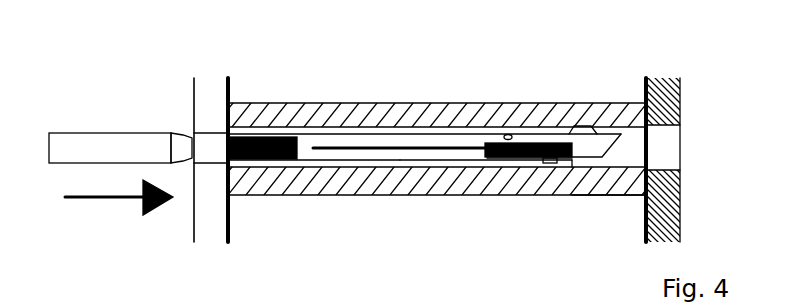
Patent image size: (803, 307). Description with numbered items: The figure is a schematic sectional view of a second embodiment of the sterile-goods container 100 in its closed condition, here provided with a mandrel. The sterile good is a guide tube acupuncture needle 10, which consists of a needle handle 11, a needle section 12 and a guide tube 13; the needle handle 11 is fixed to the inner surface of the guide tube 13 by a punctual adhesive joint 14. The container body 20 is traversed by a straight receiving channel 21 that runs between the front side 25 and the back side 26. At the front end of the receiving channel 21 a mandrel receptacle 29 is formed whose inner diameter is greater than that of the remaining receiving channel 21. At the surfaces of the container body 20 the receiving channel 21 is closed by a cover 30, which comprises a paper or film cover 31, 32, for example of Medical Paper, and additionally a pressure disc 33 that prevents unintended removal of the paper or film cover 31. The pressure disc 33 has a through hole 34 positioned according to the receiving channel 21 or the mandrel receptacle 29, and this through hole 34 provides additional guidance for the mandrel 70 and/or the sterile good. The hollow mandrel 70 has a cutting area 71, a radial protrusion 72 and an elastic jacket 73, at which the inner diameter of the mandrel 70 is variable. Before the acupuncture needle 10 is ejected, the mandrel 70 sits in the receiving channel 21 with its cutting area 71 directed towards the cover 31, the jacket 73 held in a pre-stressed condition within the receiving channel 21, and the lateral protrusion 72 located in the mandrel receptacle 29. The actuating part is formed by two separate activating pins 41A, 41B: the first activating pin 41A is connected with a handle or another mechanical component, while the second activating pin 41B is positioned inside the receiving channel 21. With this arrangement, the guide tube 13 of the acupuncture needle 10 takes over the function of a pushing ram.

The container 100 is at (453, 29).
The guide tube acupuncture needle 10 is at (427, 138).
The needle handle 11 is at (492, 160).
The needle section 12 is at (378, 150).
The guide tube 13 is at (335, 157).
The punctual adhesive joint 14 is at (512, 133).
The container body 20 is at (343, 113).
The receiving channel 21 is at (287, 126).
The front side 25 is at (648, 217).
The back side 26 is at (228, 180).
The mandrel receptacle 29 is at (623, 157).
The cover 30 is at (654, 71).
The paper or film cover 31 is at (655, 90).
The paper or film cover 32 is at (227, 227).
The pressure disc 33 is at (672, 105).
The through hole 34 is at (668, 147).
The first activating pin 41A is at (91, 143).
The second activating pin 41B is at (252, 137).
The hollow mandrel 70 is at (567, 135).
The cutting area 71 is at (611, 150).
The radial protrusion 72 is at (592, 125).
The elastic jacket 73 is at (548, 160).